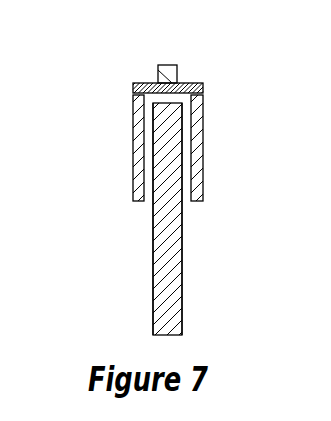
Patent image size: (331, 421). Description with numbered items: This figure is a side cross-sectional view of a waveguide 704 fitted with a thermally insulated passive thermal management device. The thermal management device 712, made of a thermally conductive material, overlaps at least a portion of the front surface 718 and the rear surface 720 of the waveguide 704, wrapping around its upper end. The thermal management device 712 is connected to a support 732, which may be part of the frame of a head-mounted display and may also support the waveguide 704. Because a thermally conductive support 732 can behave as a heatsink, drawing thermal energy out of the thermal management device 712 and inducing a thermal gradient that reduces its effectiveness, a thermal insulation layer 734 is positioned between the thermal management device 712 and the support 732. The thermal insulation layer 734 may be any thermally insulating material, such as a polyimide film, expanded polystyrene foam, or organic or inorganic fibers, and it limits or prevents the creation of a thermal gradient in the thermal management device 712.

The waveguide 704 is at (163, 264).
The thermal management device 712 is at (138, 155).
The front surface 718 is at (182, 302).
The rear surface 720 is at (153, 303).
The support 732 is at (175, 80).
The thermal insulation layer 734 is at (203, 83).